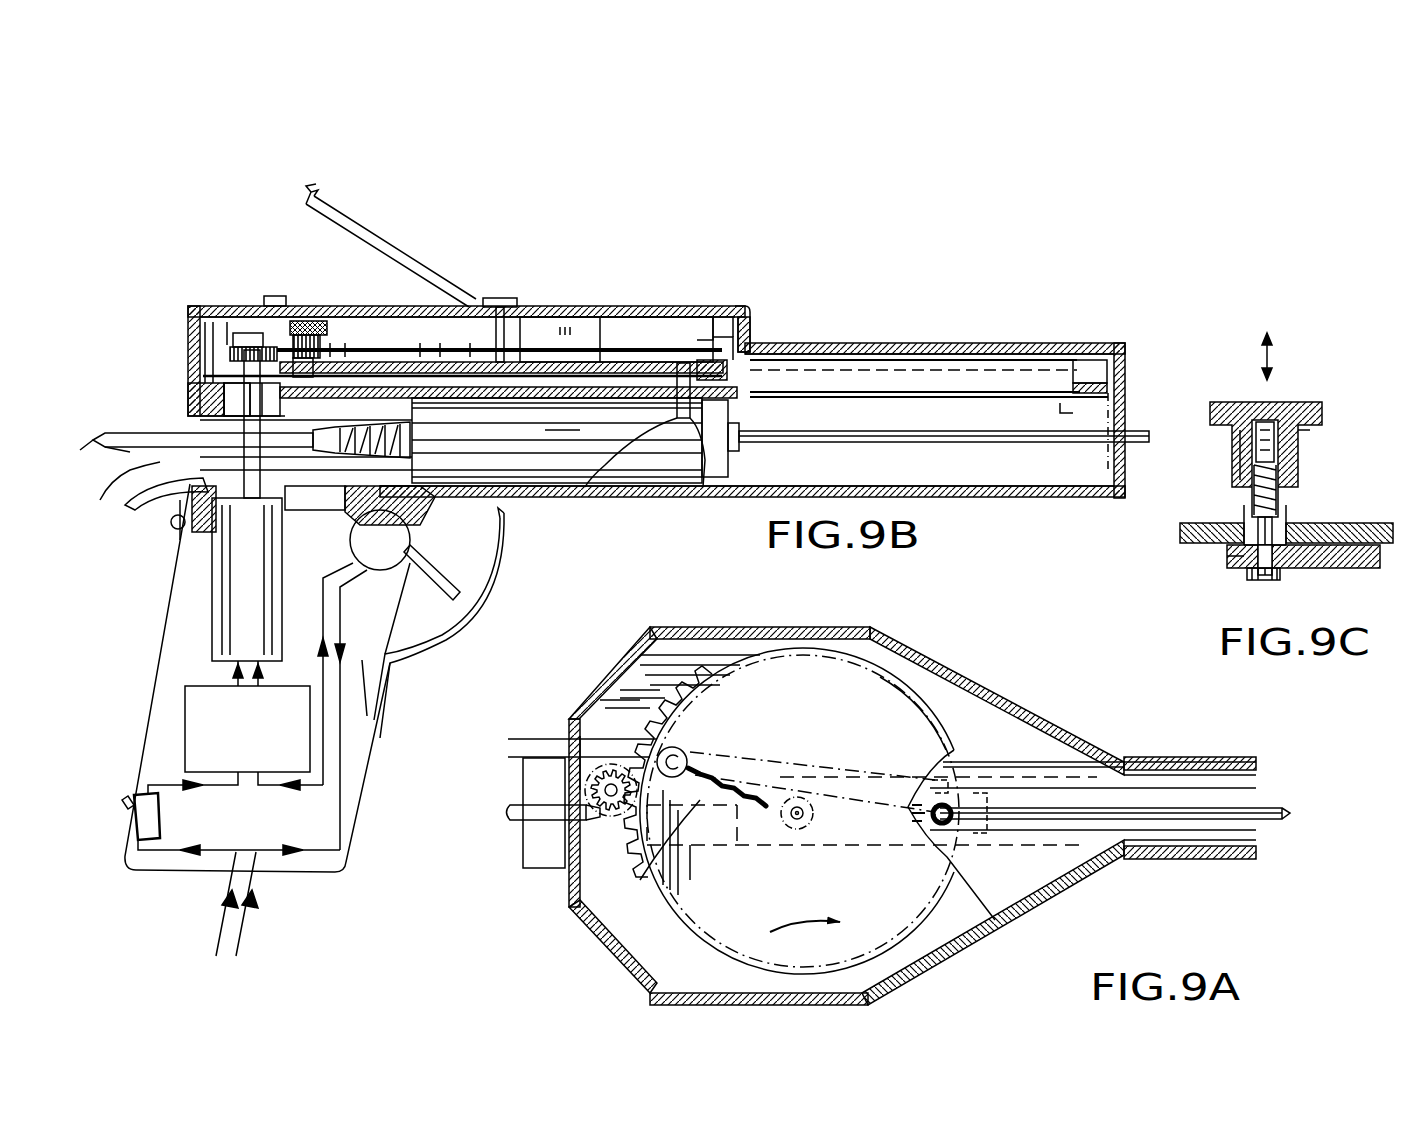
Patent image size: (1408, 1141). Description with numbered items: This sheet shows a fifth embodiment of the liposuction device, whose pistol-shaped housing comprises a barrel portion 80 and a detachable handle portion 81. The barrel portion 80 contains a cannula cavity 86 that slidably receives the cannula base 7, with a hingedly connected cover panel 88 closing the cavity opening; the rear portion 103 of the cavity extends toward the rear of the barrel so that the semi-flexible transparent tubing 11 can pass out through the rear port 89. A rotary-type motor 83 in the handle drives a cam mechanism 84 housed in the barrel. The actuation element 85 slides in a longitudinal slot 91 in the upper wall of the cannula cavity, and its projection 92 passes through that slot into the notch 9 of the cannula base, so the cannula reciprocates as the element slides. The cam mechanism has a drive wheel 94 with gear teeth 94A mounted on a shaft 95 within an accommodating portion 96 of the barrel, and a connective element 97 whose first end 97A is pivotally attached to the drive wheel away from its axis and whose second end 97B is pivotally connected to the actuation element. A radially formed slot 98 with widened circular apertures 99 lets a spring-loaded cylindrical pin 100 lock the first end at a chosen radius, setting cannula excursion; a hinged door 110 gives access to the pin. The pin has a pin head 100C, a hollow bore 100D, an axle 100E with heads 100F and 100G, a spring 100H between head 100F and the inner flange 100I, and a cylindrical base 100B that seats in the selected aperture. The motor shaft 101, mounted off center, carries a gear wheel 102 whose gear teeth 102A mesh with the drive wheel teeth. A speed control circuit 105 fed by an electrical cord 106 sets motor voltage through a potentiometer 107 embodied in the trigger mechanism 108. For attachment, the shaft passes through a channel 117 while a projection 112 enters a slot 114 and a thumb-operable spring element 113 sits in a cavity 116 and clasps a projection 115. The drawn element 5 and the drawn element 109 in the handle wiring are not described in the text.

In FIG. 9B, the drive shaft 5 is at (1142, 436).
In FIG. 9A, the drive shaft 5 is at (1278, 823).
In FIG. 9B, the cannula base 7 is at (562, 419).
In FIG. 9A, the cannula base 7 is at (950, 927).
In FIG. 9B, the notch 9 is at (598, 487).
In FIG. 9B, the semi-flexible transparent tubing 11 is at (100, 433).
In FIG. 9A, the semi-flexible transparent tubing 11 is at (550, 820).
In FIG. 9B, the barrel portion 80 is at (985, 329).
In FIG. 9B, the handle portion 81 is at (143, 670).
In FIG. 9B, the rotary-type motor 83 is at (212, 624).
In FIG. 9A, the cam mechanism 84 is at (635, 714).
In FIG. 9B, the actuation element 85 is at (712, 390).
In FIG. 9A, the actuation element 85 is at (955, 882).
In FIG. 9B, the cannula cavity 86 is at (1008, 462).
In FIG. 9A, the cannula cavity 86 is at (1190, 792).
In FIG. 9B, the cover panel 88 is at (936, 497).
In FIG. 9B, the rear port 89 is at (135, 467).
In FIG. 9B, the longitudinal slot 91 is at (945, 378).
In FIG. 9B, the projection 92 is at (712, 497).
In FIG. 9B, the drive wheel 94 is at (595, 310).
In FIG. 9A, the drive wheel 94 is at (720, 702).
In FIG. 9C, the drive wheel 94 is at (1345, 537).
In FIG. 9A, the gear teeth 94A is at (535, 747).
In FIG. 9B, the shaft 95 is at (502, 297).
In FIG. 9A, the shaft 95 is at (790, 825).
In FIG. 9B, the accommodating portion 96 is at (697, 340).
In FIG. 9A, the accommodating portion 96 is at (980, 692).
In FIG. 9B, the connective element 97 is at (360, 360).
In FIG. 9A, the connective element 97 is at (772, 768).
In FIG. 9C, the connective element 97 is at (1330, 568).
In FIG. 9A, the first end 97A is at (688, 754).
In FIG. 9A, the second end 97B is at (955, 792).
In FIG. 9B, the radially formed slot 98 is at (393, 347).
In FIG. 9A, the radially formed slot 98 is at (610, 932).
In FIG. 9A, the widened circular apertures 99 is at (660, 882).
In FIG. 9C, the widened circular apertures 99 is at (1295, 532).
In FIG. 9B, the spring-loaded cylindrical pin 100 is at (245, 348).
In FIG. 9A, the spring-loaded cylindrical pin 100 is at (580, 752).
In FIG. 9C, the spring-loaded cylindrical pin 100 is at (1305, 382).
In FIG. 9B, the cylindrical base 100B is at (292, 325).
In FIG. 9C, the cylindrical base 100B is at (1244, 522).
In FIG. 9C, the pin head 100C is at (1310, 414).
In FIG. 9C, the hollow bore 100D is at (1245, 462).
In FIG. 9C, the axle 100E is at (1228, 565).
In FIG. 9C, the head 100F is at (1285, 452).
In FIG. 9C, the head 100G is at (1255, 584).
In FIG. 9C, the spring 100H is at (1290, 482).
In FIG. 9C, the inner flange 100I is at (1283, 507).
In FIG. 9B, the shaft 101 is at (325, 457).
In FIG. 9A, the shaft 101 is at (590, 814).
In FIG. 9B, the gear wheel 102 is at (232, 352).
In FIG. 9A, the gear wheel 102 is at (605, 790).
In FIG. 9A, the gear teeth 102A is at (560, 822).
In FIG. 9B, the rear portion 103 is at (215, 425).
In FIG. 9B, the speed control circuit 105 is at (185, 744).
In FIG. 9B, the electrical cord 106 is at (240, 951).
In FIG. 9B, the potentiometer 107 is at (385, 570).
In FIG. 9B, the trigger mechanism 108 is at (448, 590).
In FIG. 9B, the switch 109 is at (137, 828).
In FIG. 9B, the hinged door 110 is at (285, 296).
In FIG. 9B, the projection 112 is at (507, 513).
In FIG. 9B, the thumb-operable spring element 113 is at (192, 510).
In FIG. 9B, the slot 114 is at (440, 486).
In FIG. 9B, the projection 115 is at (172, 530).
In FIG. 9B, the cavity 116 is at (127, 510).
In FIG. 9B, the channel 117 is at (236, 398).